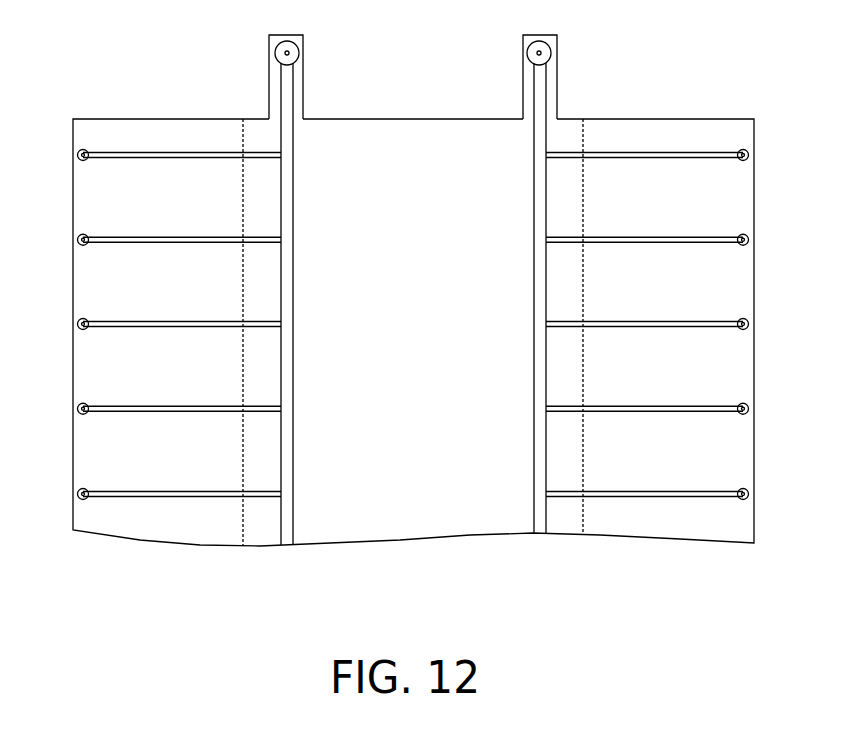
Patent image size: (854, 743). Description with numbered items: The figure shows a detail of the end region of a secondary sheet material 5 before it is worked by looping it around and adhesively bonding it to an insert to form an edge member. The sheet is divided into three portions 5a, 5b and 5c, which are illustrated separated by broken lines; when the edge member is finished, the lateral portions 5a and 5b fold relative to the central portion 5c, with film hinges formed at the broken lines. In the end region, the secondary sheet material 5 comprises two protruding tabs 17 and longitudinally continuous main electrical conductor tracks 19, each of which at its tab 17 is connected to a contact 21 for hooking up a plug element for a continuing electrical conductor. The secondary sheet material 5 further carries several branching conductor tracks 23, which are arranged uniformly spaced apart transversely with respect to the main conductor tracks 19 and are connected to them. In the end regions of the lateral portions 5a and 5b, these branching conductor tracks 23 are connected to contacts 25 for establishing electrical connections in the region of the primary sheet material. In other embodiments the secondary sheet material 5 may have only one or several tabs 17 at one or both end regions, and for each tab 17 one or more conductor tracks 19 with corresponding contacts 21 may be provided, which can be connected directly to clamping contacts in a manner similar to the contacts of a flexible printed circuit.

The secondary sheet material 5 is at (392, 103).
The lateral portion 5a is at (146, 380).
The lateral portion 5b is at (656, 380).
The portion 5c is at (399, 380).
The protruding tab 17 is at (269, 92).
The main electrical conductor track 19 is at (293, 106).
The contact 21 is at (296, 46).
The branching conductor track 23 is at (216, 406).
The contact 25 is at (92, 320).